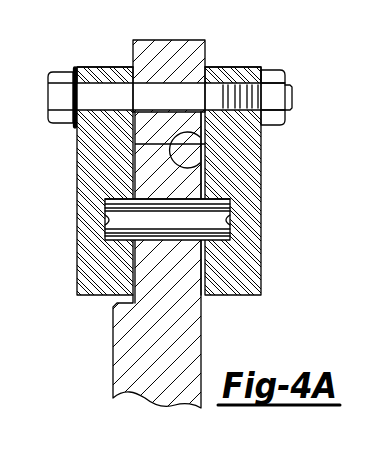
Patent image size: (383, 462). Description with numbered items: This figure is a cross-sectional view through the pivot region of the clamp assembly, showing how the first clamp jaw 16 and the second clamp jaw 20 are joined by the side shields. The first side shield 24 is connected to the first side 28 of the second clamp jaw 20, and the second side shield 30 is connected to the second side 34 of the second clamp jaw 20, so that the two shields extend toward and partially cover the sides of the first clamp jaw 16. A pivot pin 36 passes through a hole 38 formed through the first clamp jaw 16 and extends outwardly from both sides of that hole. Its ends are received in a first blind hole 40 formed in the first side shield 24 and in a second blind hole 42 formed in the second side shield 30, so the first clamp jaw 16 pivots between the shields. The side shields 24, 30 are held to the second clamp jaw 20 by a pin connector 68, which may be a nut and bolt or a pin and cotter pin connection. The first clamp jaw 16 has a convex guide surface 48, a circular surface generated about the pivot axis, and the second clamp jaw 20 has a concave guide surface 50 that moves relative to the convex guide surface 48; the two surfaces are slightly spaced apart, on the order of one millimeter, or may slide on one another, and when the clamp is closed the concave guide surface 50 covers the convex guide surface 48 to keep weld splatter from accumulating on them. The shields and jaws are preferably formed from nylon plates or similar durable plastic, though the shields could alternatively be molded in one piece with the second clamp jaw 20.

The first clamp jaw 16 is at (170, 340).
The second clamp jaw 20 is at (178, 72).
The first side shield 24 is at (77, 261).
The first side of the second clamp jaw 28 is at (133, 125).
The second side shield 30 is at (261, 272).
The second side of the second clamp jaw 34 is at (207, 123).
The pivot pin 36 is at (175, 229).
The hole 38 is at (105, 200).
The first blind hole 40 is at (105, 220).
The second blind hole 42 is at (230, 220).
The convex guide surface 48 is at (207, 166).
The concave guide surface 50 is at (205, 138).
The pin connector 68 is at (98, 93).